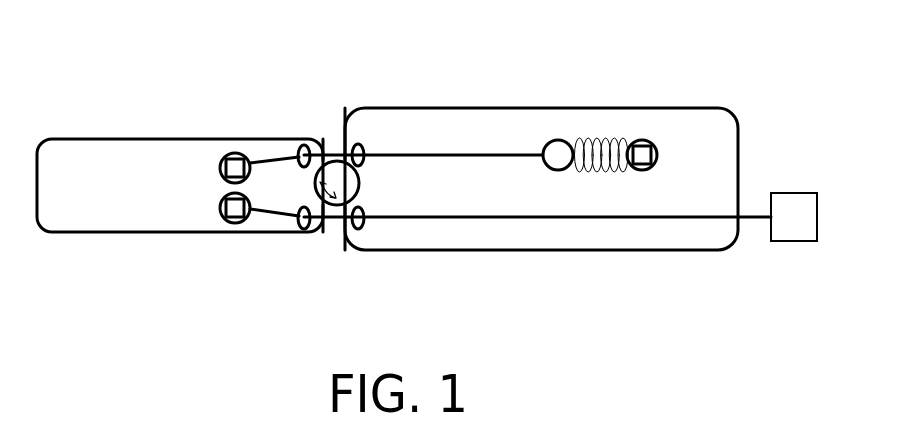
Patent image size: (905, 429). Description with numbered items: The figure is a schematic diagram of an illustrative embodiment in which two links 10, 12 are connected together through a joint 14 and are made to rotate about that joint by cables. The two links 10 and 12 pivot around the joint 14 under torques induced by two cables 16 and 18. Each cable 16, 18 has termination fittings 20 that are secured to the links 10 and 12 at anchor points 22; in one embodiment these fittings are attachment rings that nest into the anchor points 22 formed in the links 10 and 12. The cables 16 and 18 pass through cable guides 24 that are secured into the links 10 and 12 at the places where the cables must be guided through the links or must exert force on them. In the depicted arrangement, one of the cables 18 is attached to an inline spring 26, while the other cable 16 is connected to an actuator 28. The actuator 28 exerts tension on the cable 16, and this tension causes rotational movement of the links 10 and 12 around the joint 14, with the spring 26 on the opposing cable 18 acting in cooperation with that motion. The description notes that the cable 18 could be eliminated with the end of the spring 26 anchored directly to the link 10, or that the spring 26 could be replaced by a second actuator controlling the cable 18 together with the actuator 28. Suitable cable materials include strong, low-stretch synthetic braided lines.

The link 10 is at (175, 162).
The link 12 is at (527, 240).
The joint 14 is at (337, 185).
The cable 16 is at (437, 218).
The cable 18 is at (465, 150).
The termination fitting 20 is at (547, 143).
The anchor point 22 is at (248, 156).
The cable guide 24 is at (298, 146).
The inline spring 26 is at (592, 140).
The actuator 28 is at (793, 222).